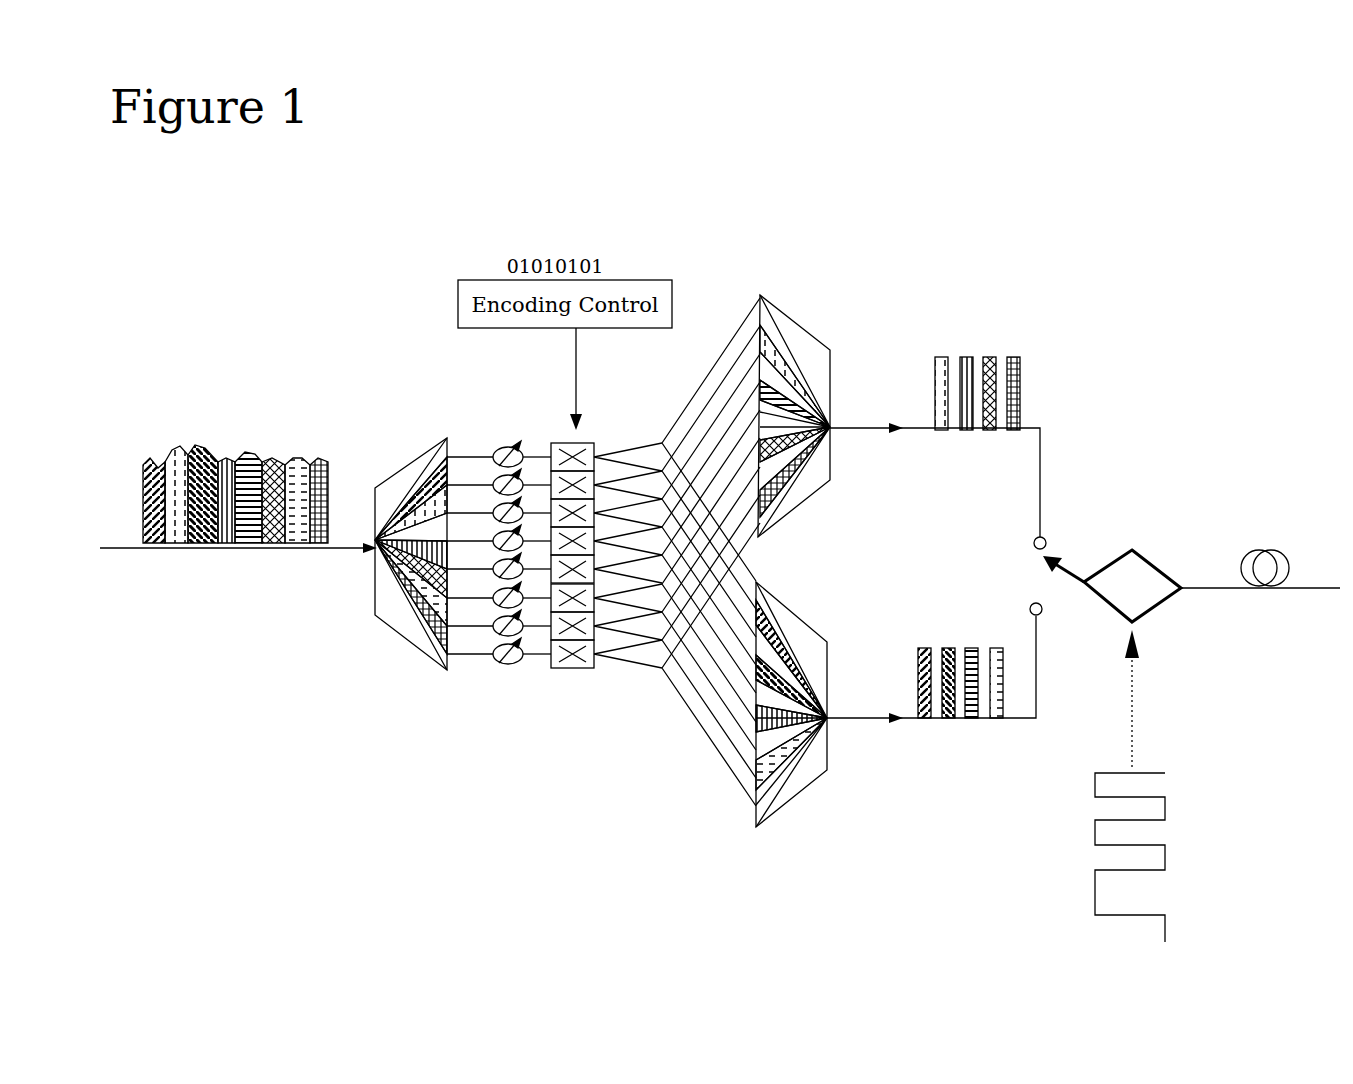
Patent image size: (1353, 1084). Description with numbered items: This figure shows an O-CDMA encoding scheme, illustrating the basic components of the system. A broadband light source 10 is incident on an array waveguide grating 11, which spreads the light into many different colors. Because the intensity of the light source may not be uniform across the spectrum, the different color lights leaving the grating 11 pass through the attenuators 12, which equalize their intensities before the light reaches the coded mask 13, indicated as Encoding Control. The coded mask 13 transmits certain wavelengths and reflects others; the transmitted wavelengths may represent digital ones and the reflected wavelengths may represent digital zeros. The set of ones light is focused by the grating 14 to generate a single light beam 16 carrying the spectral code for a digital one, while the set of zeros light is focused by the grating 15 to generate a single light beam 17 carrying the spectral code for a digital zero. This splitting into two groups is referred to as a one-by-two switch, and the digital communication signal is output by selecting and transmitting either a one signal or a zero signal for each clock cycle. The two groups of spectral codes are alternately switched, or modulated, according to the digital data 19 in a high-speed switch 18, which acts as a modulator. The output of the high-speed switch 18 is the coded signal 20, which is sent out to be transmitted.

The broadband light source 10 is at (257, 448).
The array waveguide grating 11 is at (390, 630).
The attenuators 12 is at (515, 668).
The coded mask 13 is at (578, 676).
The grating 14 is at (786, 312).
The grating 15 is at (780, 815).
The light beam 16 is at (977, 375).
The light beam 17 is at (960, 665).
The high-speed switch 18 is at (1143, 553).
The digital data 19 is at (1088, 850).
The coded signal 20 is at (1262, 595).